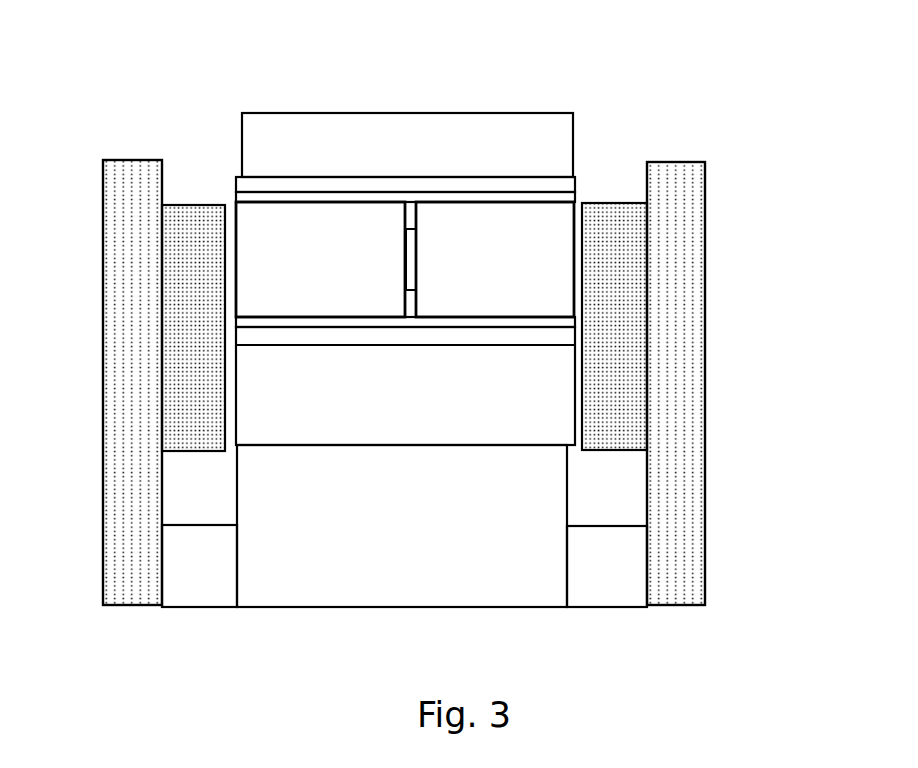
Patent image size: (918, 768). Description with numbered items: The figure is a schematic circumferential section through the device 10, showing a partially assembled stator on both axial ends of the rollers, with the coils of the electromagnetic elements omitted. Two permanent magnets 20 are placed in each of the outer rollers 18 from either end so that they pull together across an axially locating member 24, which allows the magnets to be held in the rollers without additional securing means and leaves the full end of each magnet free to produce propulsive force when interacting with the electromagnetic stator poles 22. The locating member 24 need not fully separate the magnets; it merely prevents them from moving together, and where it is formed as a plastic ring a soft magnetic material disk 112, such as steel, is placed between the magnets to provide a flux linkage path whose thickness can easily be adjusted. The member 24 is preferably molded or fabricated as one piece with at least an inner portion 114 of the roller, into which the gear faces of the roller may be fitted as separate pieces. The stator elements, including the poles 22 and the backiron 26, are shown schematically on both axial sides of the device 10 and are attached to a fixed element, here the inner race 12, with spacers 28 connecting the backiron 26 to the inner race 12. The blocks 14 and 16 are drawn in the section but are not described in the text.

The device 10 is at (367, 50).
The inner race 12 is at (398, 547).
The top plate 14 is at (420, 148).
The intermediate block 16 is at (398, 402).
The outer rollers 18 is at (467, 188).
The permanent magnets 20 is at (253, 215).
The electromagnetic stator poles 22 is at (193, 215).
The axially locating member 24 is at (410, 218).
The backiron 26 is at (678, 272).
The spacers 28 is at (625, 572).
The soft magnetic material disk 112 is at (405, 290).
The inner portion of the rollers 114 is at (568, 198).